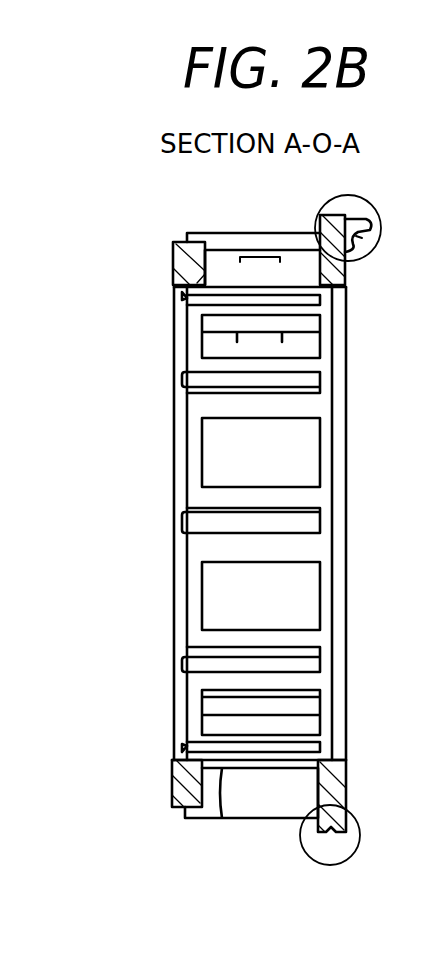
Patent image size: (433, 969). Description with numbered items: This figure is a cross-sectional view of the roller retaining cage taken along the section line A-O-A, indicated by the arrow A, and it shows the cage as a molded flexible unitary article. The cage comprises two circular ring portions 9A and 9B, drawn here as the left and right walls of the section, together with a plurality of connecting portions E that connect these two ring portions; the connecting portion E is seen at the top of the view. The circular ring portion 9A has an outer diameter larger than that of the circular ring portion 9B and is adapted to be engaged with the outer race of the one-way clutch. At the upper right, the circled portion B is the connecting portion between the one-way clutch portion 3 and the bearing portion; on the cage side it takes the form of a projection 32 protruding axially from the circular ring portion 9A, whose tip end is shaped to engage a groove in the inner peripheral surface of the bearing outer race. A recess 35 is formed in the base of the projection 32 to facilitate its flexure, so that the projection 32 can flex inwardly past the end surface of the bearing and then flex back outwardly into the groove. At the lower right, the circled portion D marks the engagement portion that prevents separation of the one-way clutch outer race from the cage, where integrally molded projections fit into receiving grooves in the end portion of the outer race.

The connecting portion E is at (253, 232).
The connecting portion between one-way clutch portion and bearing portion B is at (370, 196).
The projection 32 is at (370, 223).
The recess 35 is at (352, 243).
The circular ring portion 9B is at (181, 325).
The circular ring portion 9A is at (346, 349).
The one-way clutch portion 3 is at (427, 402).
The section line A-O- A is at (432, 450).
The engagement portion D is at (358, 848).